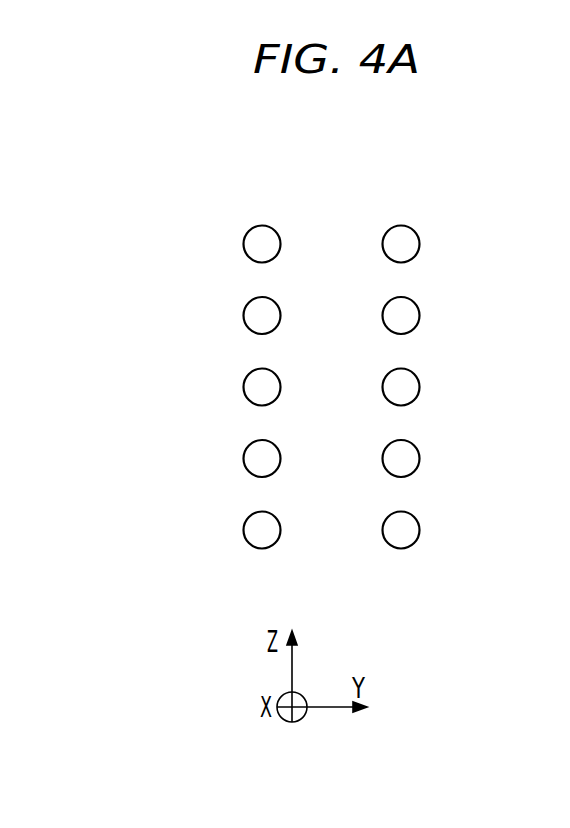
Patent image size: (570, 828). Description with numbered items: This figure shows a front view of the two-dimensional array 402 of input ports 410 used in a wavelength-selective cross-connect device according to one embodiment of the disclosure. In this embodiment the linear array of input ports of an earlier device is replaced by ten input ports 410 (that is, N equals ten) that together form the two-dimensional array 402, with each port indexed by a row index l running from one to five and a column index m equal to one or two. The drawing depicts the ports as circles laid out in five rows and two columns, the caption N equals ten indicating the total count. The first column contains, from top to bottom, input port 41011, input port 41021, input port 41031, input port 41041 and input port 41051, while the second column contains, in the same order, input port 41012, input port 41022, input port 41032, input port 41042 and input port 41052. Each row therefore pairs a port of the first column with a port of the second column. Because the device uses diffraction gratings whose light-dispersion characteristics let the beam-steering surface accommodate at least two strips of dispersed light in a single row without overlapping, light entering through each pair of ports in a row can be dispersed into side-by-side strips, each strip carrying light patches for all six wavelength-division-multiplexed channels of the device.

The two-dimensional array 402 is at (347, 132).
The input ports 410 is at (331, 387).
The input port 41011 is at (243, 244).
The input port 41021 is at (243, 316).
The input port 41031 is at (243, 387).
The input port 41041 is at (243, 458).
The input port 41051 is at (243, 530).
The input port 41012 is at (420, 244).
The input port 41022 is at (420, 316).
The input port 41032 is at (420, 387).
The input port 41042 is at (420, 458).
The input port 41052 is at (420, 530).